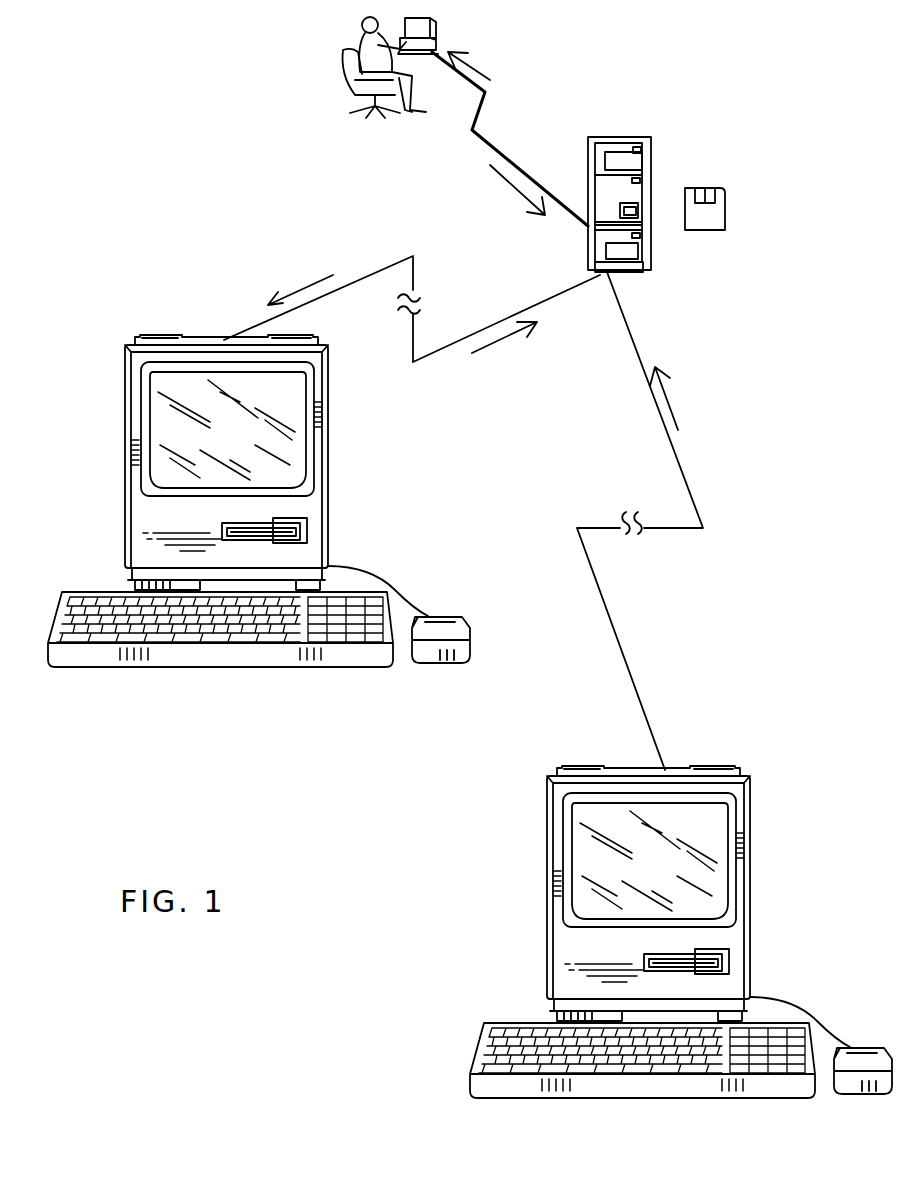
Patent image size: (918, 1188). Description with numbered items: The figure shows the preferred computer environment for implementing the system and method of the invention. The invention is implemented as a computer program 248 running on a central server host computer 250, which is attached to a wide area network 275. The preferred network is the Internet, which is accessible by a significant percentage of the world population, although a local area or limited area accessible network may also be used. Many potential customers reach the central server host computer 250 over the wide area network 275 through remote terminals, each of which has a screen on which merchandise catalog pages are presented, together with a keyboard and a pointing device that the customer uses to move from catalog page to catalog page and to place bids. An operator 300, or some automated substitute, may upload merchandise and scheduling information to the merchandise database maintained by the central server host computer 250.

The computer program 248 is at (725, 205).
The central server host computer 250 is at (628, 137).
The wide area network 275 is at (628, 377).
The operator 300 is at (338, 42).